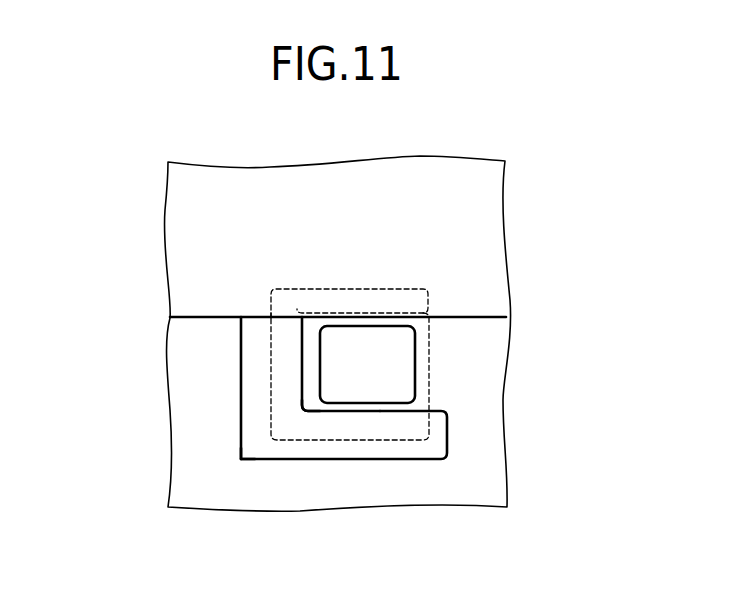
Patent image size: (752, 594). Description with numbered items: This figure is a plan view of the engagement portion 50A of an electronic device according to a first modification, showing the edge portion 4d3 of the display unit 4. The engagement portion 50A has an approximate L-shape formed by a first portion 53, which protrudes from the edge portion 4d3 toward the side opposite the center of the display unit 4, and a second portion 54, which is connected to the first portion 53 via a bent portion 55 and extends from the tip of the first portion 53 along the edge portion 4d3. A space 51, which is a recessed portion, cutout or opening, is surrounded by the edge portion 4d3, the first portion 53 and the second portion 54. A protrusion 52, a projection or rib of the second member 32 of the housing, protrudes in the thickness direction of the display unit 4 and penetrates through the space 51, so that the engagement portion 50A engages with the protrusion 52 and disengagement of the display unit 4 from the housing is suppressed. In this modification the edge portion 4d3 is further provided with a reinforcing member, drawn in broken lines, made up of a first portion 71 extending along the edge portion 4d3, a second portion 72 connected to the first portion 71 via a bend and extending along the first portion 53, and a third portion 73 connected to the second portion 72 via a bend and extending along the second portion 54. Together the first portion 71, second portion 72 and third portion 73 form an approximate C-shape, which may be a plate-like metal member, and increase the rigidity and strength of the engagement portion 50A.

The display unit 4 is at (465, 159).
The space 51 is at (444, 320).
The edge portion 4d3 is at (470, 318).
The first portion 53 is at (258, 387).
The second portion 54 is at (403, 448).
The bent portion 55 is at (254, 435).
The engagement portion 50A is at (241, 460).
The protrusion 52 is at (416, 365).
The first portion 71 is at (374, 307).
The second portion 72 is at (298, 348).
The third portion 73 is at (413, 430).
The second member 32 is at (173, 458).